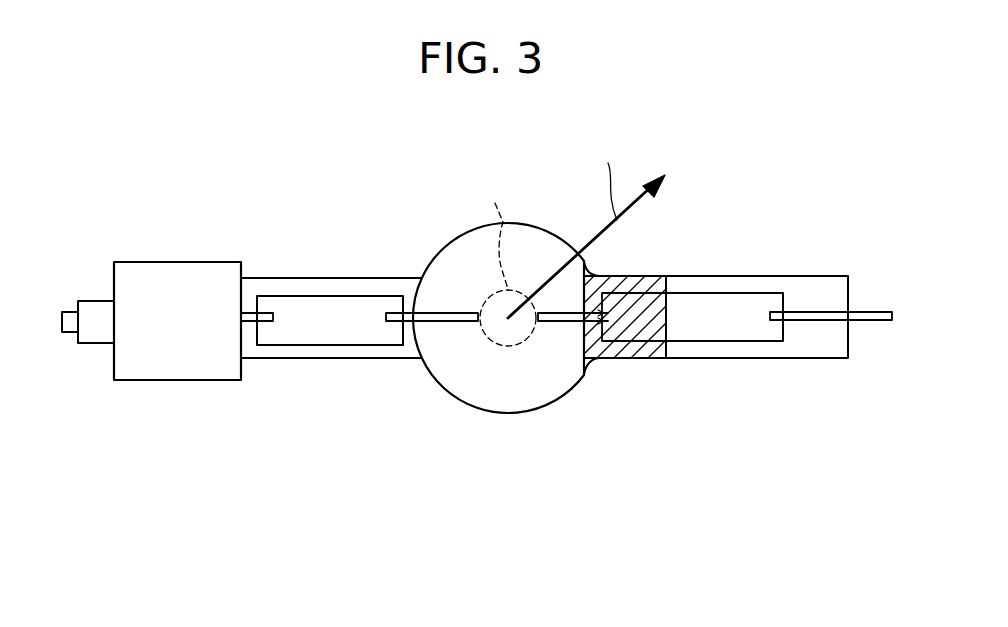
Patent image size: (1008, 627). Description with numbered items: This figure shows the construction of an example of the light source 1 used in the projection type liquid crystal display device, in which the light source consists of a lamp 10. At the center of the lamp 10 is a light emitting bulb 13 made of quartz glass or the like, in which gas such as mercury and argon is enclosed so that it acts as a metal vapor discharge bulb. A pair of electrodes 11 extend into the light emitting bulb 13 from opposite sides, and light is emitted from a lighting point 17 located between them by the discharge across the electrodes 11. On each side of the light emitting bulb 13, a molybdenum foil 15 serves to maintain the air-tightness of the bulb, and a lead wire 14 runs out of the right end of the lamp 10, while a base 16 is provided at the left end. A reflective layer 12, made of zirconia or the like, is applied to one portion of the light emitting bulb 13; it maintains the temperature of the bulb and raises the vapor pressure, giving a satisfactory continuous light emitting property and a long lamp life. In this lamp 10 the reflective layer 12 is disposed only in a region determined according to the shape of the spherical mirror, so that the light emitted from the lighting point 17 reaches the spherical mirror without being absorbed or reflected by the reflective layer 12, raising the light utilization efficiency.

The light source 1 is at (758, 142).
The lamp 10 is at (352, 277).
The electrode 11 is at (440, 313).
The reflective layer 12 is at (625, 358).
The light emitting bulb 13 is at (515, 413).
The lead wire 14 is at (867, 322).
The molybdenum foil 15 is at (322, 333).
The base 16 is at (187, 262).
The lighting point 17 is at (499, 261).